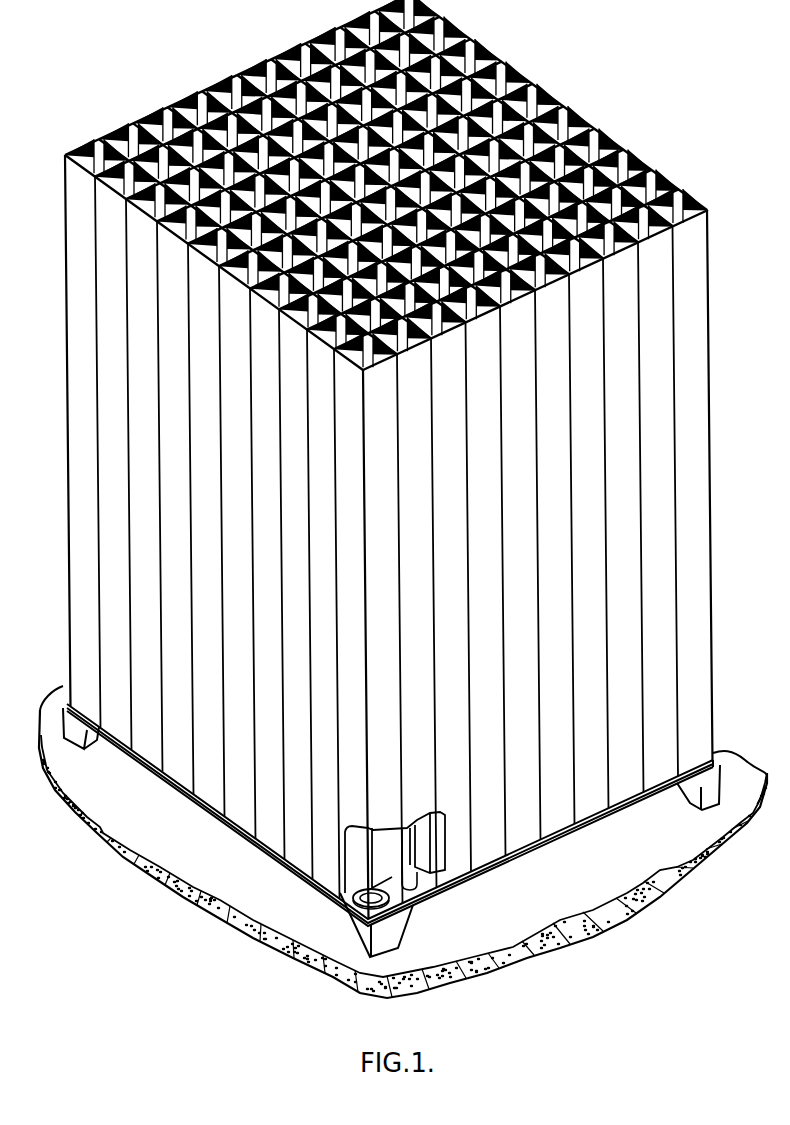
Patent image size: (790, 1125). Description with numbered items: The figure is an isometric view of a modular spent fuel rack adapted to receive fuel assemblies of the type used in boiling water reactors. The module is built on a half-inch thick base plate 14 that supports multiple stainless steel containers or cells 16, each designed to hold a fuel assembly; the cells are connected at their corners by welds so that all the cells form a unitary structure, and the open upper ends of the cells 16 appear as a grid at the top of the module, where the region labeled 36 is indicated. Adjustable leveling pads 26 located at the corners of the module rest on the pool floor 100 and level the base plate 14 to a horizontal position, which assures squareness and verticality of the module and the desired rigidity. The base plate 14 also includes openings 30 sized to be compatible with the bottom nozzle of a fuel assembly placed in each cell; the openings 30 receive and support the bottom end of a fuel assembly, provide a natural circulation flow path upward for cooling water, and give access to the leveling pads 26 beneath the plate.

The base plate 14 is at (568, 835).
The cells 16 is at (662, 340).
The adjustable leveling pads 26 is at (72, 723).
The openings 30 is at (380, 904).
The cell grid / separator lattice 36 is at (505, 76).
The pool floor 100 is at (564, 905).